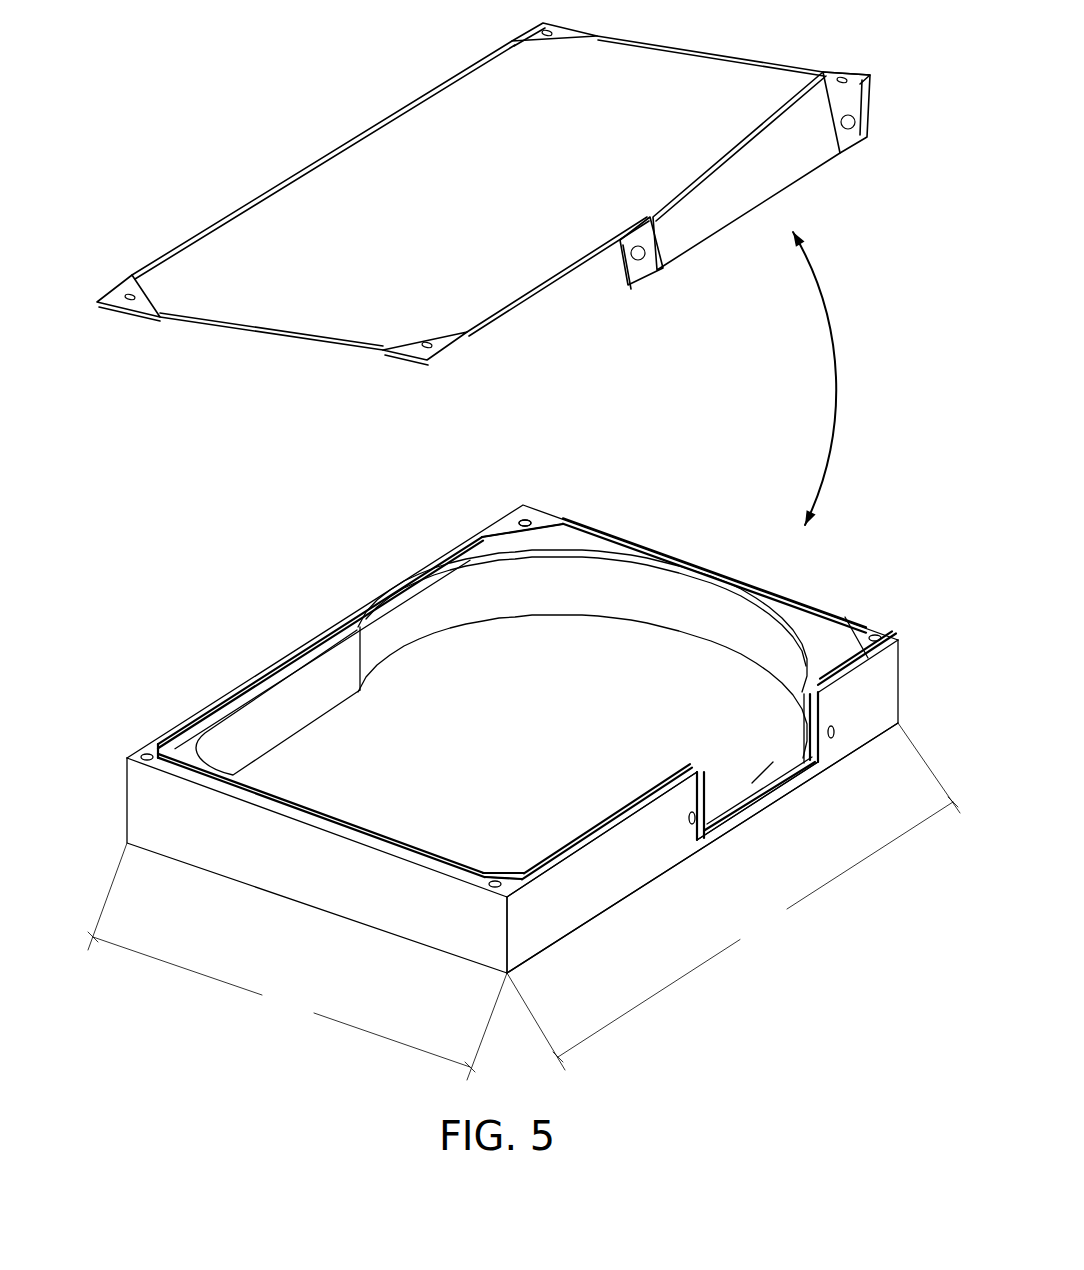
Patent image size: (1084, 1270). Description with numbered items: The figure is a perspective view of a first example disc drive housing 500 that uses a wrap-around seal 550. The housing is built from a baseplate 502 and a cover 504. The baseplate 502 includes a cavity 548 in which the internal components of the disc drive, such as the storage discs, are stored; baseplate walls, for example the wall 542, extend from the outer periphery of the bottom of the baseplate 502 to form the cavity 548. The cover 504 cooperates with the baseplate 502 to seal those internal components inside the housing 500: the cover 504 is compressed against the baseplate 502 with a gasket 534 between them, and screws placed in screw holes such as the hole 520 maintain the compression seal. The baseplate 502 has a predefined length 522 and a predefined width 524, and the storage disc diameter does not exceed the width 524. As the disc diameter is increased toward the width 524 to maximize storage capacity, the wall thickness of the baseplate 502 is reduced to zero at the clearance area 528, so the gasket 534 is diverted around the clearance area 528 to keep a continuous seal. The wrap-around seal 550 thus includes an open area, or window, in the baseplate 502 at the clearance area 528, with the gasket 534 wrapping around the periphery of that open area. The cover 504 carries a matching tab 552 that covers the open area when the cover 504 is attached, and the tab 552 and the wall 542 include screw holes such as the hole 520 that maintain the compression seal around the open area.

The disc drive housing 500 is at (200, 64).
The baseplate 502 is at (512, 739).
The cover 504 is at (483, 194).
The hole 520 is at (492, 890).
The length 522 is at (733, 896).
The width 524 is at (297, 961).
The clearance area 528 is at (787, 762).
The gasket 534 is at (523, 505).
The wall 542 is at (702, 848).
The cavity 548 is at (580, 681).
The wrap-around seal 550 is at (740, 781).
The tab 552 is at (761, 171).